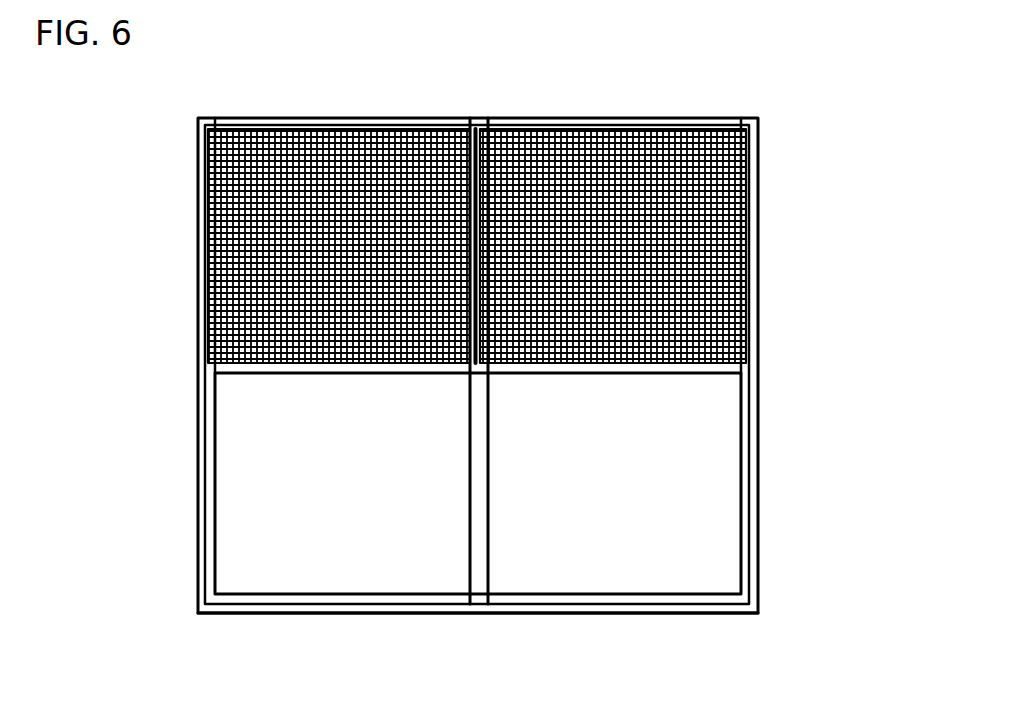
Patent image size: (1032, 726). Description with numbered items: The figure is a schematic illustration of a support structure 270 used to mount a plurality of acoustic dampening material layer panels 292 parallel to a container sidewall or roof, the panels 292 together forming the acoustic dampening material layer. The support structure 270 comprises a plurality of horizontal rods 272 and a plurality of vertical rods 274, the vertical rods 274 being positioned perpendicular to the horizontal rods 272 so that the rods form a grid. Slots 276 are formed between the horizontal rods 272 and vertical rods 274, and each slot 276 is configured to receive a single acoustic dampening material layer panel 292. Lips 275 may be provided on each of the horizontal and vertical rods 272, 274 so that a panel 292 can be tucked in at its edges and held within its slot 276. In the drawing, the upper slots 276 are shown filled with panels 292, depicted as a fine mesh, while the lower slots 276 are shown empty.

The support structure 270 is at (510, 372).
The horizontal rods 272 is at (598, 615).
The vertical rods 274 is at (756, 542).
The lips 275 is at (750, 437).
The slots 276 is at (328, 570).
The acoustic dampening material layer panels 292 is at (253, 230).